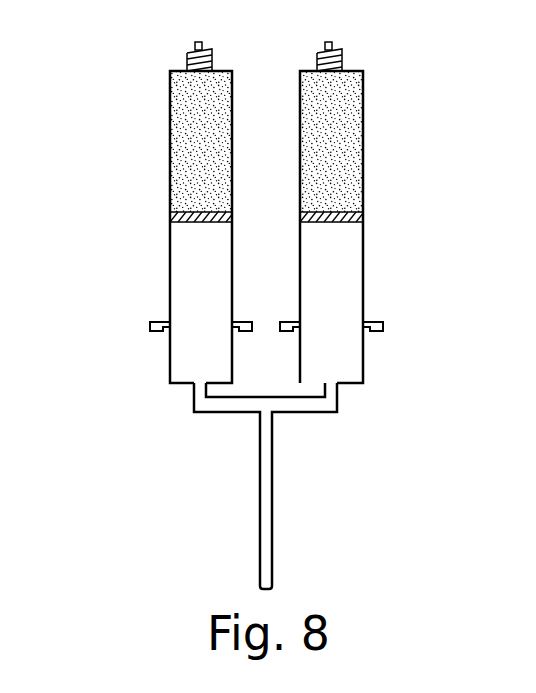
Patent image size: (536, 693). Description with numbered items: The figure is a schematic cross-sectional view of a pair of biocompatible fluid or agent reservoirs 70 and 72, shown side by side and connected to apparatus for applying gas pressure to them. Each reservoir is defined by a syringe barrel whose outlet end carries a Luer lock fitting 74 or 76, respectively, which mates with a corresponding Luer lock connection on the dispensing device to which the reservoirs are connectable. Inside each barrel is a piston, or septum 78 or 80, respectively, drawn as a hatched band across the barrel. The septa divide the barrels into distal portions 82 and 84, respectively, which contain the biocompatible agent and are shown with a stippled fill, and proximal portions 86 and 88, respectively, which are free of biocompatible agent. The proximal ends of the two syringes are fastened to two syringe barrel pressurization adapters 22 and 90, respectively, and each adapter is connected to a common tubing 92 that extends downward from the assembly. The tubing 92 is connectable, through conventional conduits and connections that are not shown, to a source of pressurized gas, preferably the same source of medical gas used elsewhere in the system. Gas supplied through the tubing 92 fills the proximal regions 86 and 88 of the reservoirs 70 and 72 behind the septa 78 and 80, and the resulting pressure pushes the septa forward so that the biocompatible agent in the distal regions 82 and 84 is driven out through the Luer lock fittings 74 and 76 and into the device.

The syringe barrel pressurization adapter 22 is at (363, 356).
The biocompatible agent reservoir 70 is at (370, 212).
The biocompatible agent reservoir 72 is at (172, 215).
The Luer lock fitting 74 is at (343, 58).
The Luer lock fitting 76 is at (213, 57).
The septum 78 is at (363, 215).
The septum 80 is at (170, 214).
The distal portion 82 is at (352, 99).
The distal portion 84 is at (180, 113).
The proximal portion 86 is at (347, 283).
The proximal portion 88 is at (182, 278).
The syringe barrel pressurization adapter 90 is at (170, 357).
The tubing 92 is at (273, 481).